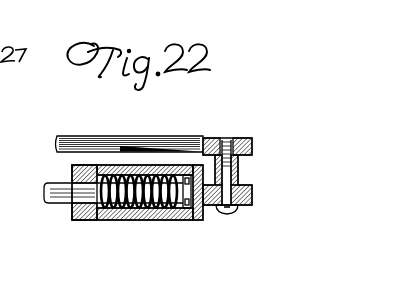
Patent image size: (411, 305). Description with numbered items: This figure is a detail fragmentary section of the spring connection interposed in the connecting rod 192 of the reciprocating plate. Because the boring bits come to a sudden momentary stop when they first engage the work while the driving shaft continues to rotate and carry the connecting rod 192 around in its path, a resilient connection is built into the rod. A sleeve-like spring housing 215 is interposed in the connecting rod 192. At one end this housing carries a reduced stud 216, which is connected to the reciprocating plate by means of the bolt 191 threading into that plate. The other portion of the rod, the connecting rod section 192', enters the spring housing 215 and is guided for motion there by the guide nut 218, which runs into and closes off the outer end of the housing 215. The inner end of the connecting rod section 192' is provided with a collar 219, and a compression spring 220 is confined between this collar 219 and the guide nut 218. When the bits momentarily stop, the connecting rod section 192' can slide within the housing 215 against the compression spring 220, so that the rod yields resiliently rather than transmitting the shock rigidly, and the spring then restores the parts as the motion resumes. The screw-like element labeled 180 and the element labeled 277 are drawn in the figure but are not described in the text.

The compression spring 220 is at (137, 170).
The bolt 191 is at (250, 140).
The stem 180 is at (238, 156).
The reduced stud 216 is at (253, 193).
The screw 277 is at (238, 209).
The connecting rod 192 is at (154, 223).
The guide nut 218 is at (74, 220).
The connecting rod section 192' is at (92, 218).
The spring housing 215 is at (141, 220).
The collar 219 is at (186, 221).